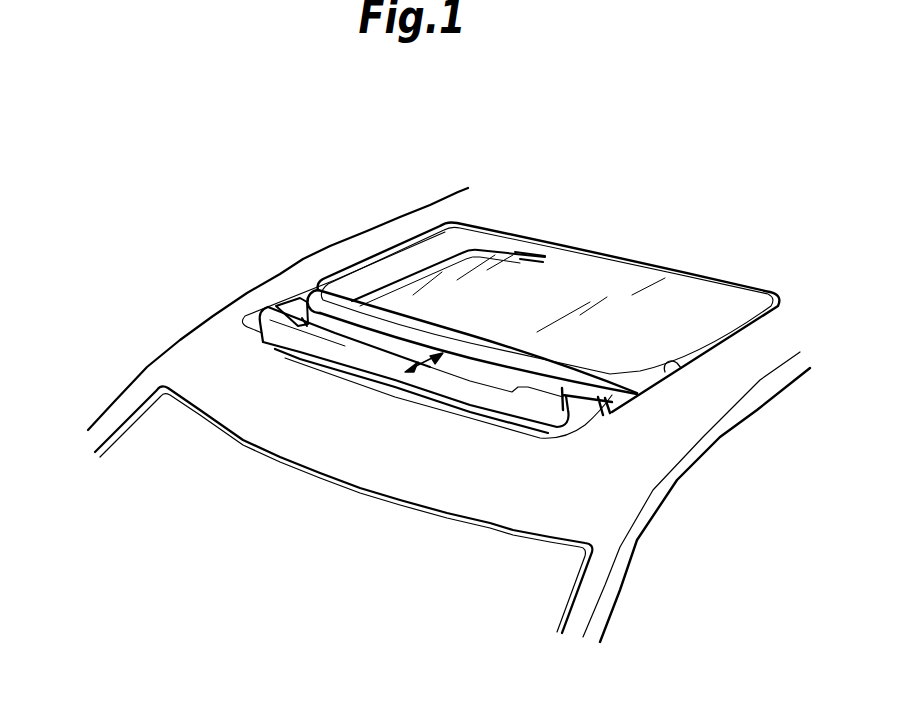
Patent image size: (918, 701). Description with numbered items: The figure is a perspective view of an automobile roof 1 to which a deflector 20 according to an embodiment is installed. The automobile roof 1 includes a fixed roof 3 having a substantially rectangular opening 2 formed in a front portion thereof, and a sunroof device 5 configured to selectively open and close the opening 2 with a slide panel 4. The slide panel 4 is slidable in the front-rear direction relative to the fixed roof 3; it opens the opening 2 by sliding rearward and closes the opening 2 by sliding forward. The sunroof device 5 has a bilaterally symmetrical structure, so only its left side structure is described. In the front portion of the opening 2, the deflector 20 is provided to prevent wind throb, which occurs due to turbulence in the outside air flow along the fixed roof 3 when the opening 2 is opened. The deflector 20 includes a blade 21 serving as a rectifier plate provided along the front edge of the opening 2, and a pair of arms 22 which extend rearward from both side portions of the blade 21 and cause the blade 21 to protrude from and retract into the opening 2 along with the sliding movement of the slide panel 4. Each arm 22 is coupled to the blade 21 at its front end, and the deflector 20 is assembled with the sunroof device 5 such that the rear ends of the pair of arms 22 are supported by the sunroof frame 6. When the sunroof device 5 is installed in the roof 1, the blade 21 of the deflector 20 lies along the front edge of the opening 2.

The automobile roof 1 is at (493, 316).
The opening 2 is at (680, 362).
The fixed roof 3 is at (636, 453).
The slide panel 4 is at (583, 262).
The sunroof device 5 is at (442, 415).
The sunroof frame 6 is at (560, 430).
The deflector 20 is at (269, 342).
The blade 21 is at (337, 360).
The arms 22 is at (308, 305).